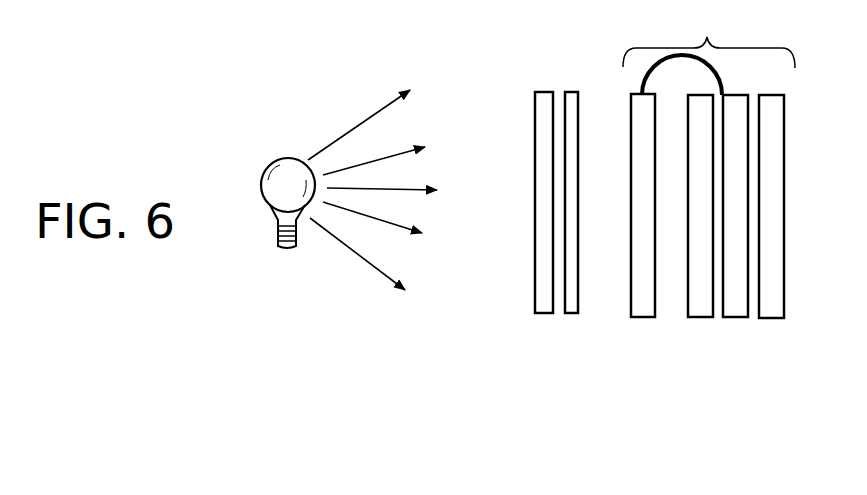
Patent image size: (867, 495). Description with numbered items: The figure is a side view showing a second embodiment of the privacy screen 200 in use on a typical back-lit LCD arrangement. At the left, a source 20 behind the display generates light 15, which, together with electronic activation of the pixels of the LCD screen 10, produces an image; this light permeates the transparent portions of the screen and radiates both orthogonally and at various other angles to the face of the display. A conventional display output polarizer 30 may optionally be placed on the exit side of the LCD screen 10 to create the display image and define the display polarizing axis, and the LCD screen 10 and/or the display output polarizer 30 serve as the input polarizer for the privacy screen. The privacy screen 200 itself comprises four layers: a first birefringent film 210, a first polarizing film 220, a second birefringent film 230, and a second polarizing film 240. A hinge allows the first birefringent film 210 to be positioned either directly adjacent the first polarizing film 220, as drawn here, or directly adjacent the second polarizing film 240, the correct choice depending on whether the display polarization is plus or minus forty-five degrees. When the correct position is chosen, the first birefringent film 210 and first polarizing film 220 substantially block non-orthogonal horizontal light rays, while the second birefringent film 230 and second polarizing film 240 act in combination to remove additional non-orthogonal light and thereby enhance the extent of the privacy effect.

The LCD screen 10 is at (542, 314).
The display output polarizer 30 is at (570, 314).
The light 15 is at (382, 108).
The source 20 is at (270, 172).
The privacy screen 200 is at (709, 53).
The first birefringent film 210 is at (641, 318).
The first polarizing film 220 is at (698, 318).
The second birefringent film 230 is at (733, 318).
The second polarizing film 240 is at (769, 319).